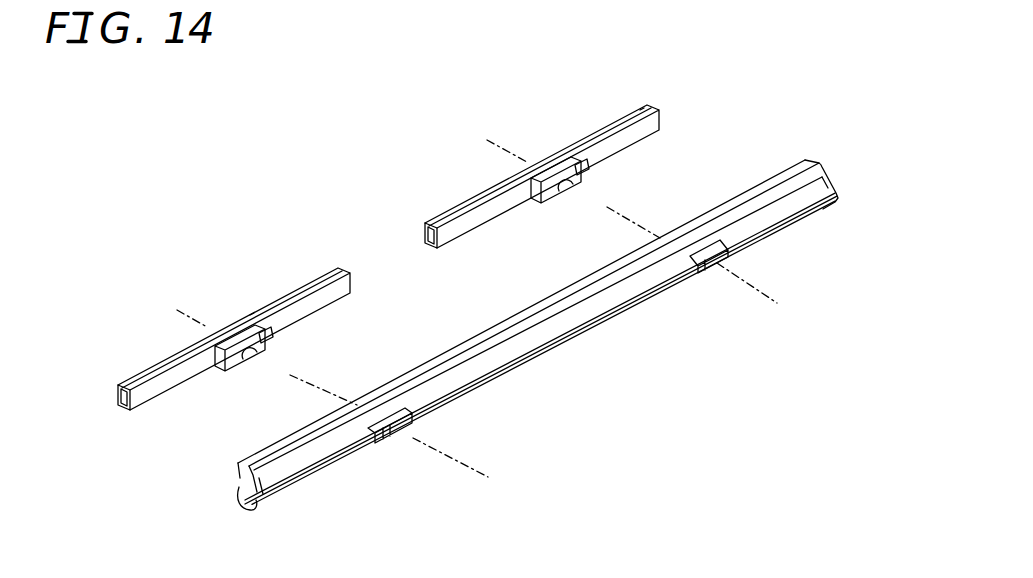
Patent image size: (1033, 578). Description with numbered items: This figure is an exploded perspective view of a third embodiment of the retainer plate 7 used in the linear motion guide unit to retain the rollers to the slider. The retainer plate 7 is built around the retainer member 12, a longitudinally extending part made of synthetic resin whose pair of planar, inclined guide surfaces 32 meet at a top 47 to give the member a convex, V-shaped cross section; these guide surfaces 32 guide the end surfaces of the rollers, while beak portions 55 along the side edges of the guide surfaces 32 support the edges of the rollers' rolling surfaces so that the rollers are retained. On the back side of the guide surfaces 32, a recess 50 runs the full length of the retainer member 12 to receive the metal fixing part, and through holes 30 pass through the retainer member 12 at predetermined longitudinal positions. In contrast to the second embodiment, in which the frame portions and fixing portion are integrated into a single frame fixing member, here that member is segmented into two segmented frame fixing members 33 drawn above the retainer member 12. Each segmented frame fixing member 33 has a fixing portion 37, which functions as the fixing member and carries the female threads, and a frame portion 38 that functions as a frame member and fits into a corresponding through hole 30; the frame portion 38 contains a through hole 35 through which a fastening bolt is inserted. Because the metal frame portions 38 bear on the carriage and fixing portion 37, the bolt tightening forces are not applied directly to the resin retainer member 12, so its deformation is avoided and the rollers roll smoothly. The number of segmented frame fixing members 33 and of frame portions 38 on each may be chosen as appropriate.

The retainer plate 7 is at (718, 153).
The retainer member 12 is at (543, 338).
The through holes 30 is at (390, 440).
The guide surfaces 32 is at (608, 303).
The segmented frame fixing members 33 is at (484, 192).
The through hole 35 is at (567, 190).
The fixing portion 37 is at (633, 111).
The frame portions 38 is at (586, 175).
The top 47 is at (592, 330).
The recess 50 is at (237, 494).
The beak portions 55 is at (518, 378).